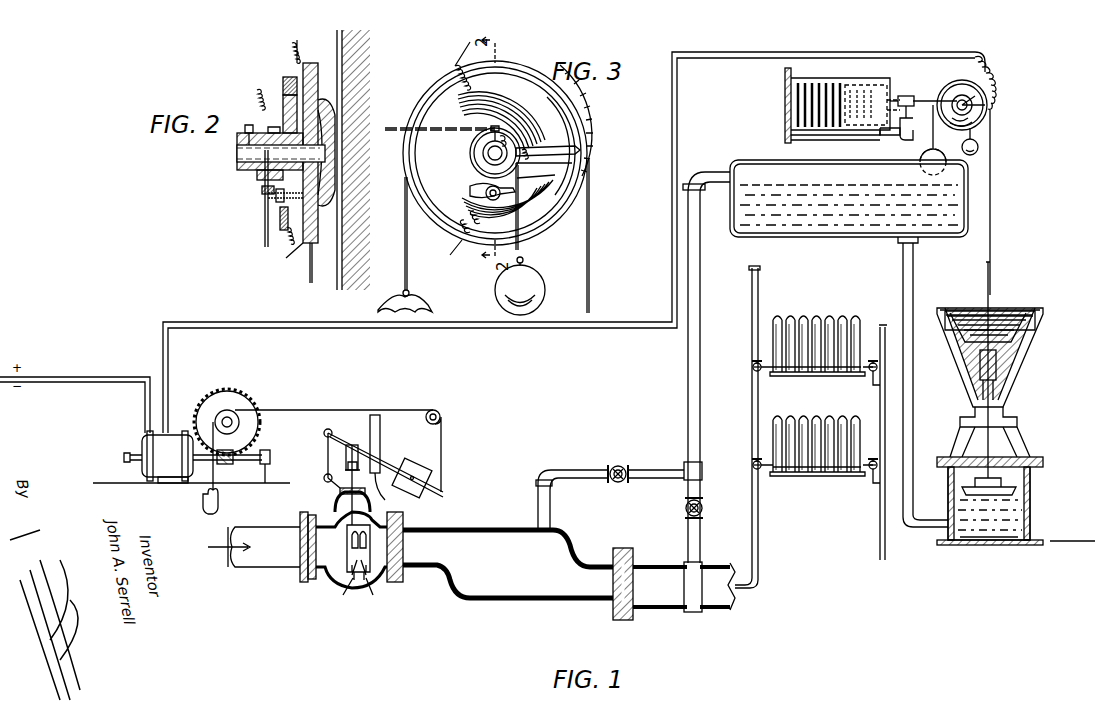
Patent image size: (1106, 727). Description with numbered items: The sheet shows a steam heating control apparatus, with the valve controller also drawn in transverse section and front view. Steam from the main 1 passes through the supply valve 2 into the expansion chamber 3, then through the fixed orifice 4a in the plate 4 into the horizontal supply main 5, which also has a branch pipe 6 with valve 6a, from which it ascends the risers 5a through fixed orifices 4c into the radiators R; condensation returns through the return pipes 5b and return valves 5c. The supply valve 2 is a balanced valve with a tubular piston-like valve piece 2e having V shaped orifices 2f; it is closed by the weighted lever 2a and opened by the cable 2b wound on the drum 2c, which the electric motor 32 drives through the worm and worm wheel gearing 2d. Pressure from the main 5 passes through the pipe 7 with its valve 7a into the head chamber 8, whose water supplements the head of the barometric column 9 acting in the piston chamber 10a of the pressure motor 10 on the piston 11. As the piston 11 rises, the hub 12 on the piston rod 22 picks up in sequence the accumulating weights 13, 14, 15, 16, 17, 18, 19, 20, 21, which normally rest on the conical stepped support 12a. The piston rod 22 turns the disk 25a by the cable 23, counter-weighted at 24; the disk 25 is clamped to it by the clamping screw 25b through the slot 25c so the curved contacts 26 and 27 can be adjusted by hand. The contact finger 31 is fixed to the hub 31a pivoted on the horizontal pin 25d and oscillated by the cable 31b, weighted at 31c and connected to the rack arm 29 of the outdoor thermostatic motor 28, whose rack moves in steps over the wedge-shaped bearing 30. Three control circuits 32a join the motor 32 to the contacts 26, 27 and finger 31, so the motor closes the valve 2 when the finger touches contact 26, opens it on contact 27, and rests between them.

In FIG. 1, the steam main 1 is at (258, 547).
In FIG. 1, the supply valve 2 is at (355, 516).
In FIG. 1, the weighted lever 2a is at (413, 466).
In FIG. 1, the cable 2b is at (338, 440).
In FIG. 1, the drum 2c is at (227, 451).
In FIG. 1, the worm and worm wheel gearing 2d is at (243, 466).
In FIG. 1, the tubular piston-like valve piece 2e is at (341, 592).
In FIG. 1, the V shaped orifices 2f is at (370, 592).
In FIG. 1, the expansion chamber 3 is at (508, 564).
In FIG. 1, the plate 4 is at (628, 584).
In FIG. 1, the fixed orifice 4a is at (618, 580).
In FIG. 1, the fixed orifices 4c is at (753, 372).
In FIG. 1, the horizontal supply main 5 is at (684, 587).
In FIG. 1, the risers 5a is at (758, 540).
In FIG. 1, the return pipes 5b is at (882, 540).
In FIG. 1, the return valves 5c is at (872, 413).
In FIG. 1, the bypass pipe 6 is at (655, 470).
In FIG. 1, the bypass valve 6a is at (618, 465).
In FIG. 1, the pipe 7 is at (700, 435).
In FIG. 1, the valve 7a is at (702, 508).
In FIG. 1, the head chamber 8 is at (849, 201).
In FIG. 1, the barometric column 9 is at (914, 380).
In FIG. 1, the pressure motor 10 is at (1031, 487).
In FIG. 1, the piston chamber 10a is at (982, 541).
In FIG. 1, the piston 11 is at (992, 478).
In FIG. 1, the hub 12 is at (988, 375).
In FIG. 1, the stepped support 12a is at (1010, 376).
In FIG. 1, the accumulating weight 13 is at (975, 372).
In FIG. 1, the accumulating weight 14 is at (978, 368).
In FIG. 1, the accumulating weight 15 is at (980, 362).
In FIG. 1, the accumulating weight 16 is at (985, 355).
In FIG. 1, the accumulating weight 17 is at (988, 348).
In FIG. 1, the accumulating weight 18 is at (1030, 338).
In FIG. 1, the accumulating weight 19 is at (1038, 328).
In FIG. 1, the accumulating weight 20 is at (1040, 322).
In FIG. 1, the accumulating weight 21 is at (1042, 312).
In FIG. 1, the piston rod 22 is at (990, 300).
In FIG. 1, the cable 23 is at (990, 228).
In FIG. 2, the cable 23 is at (307, 275).
In FIG. 3, the cable 23 is at (407, 280).
In FIG. 1, the counter-weight 24 is at (922, 155).
In FIG. 3, the counter-weight 24 is at (420, 307).
In FIG. 3, the disk 25 is at (495, 153).
In FIG. 2, the disk 25a is at (318, 58).
In FIG. 3, the disk 25a is at (425, 97).
In FIG. 2, the clamping screw 25b is at (268, 196).
In FIG. 3, the clamping screw 25b is at (475, 192).
In FIG. 2, the slot 25c is at (292, 233).
In FIG. 3, the slot 25c is at (544, 206).
In FIG. 2, the horizontal pin 25d is at (240, 153).
In FIG. 1, the contact block 26 is at (985, 120).
In FIG. 2, the contact block 26 is at (280, 218).
In FIG. 3, the contact block 26 is at (520, 196).
In FIG. 1, the contact block 27 is at (983, 94).
In FIG. 2, the contact block 27 is at (286, 80).
In FIG. 3, the contact block 27 is at (521, 148).
In FIG. 1, the thermostatic motor 28 is at (812, 80).
In FIG. 1, the rack arm 29 is at (901, 94).
In FIG. 1, the wedge-shaped bearing 30 is at (913, 123).
In FIG. 1, the contact finger 31 is at (968, 101).
In FIG. 2, the contact finger 31 is at (283, 108).
In FIG. 3, the contact finger 31 is at (540, 149).
In FIG. 2, the hub 31a is at (258, 178).
In FIG. 3, the hub 31a is at (503, 124).
In FIG. 1, the cable 31b is at (927, 100).
In FIG. 2, the cable 31b is at (262, 240).
In FIG. 3, the cable 31b is at (396, 128).
In FIG. 1, the weight 31c is at (980, 150).
In FIG. 3, the weight 31c is at (520, 286).
In FIG. 1, the electric motor 32 is at (191, 457).
In FIG. 1, the control circuits 32a is at (338, 325).
In FIG. 1, the radiators R is at (817, 382).